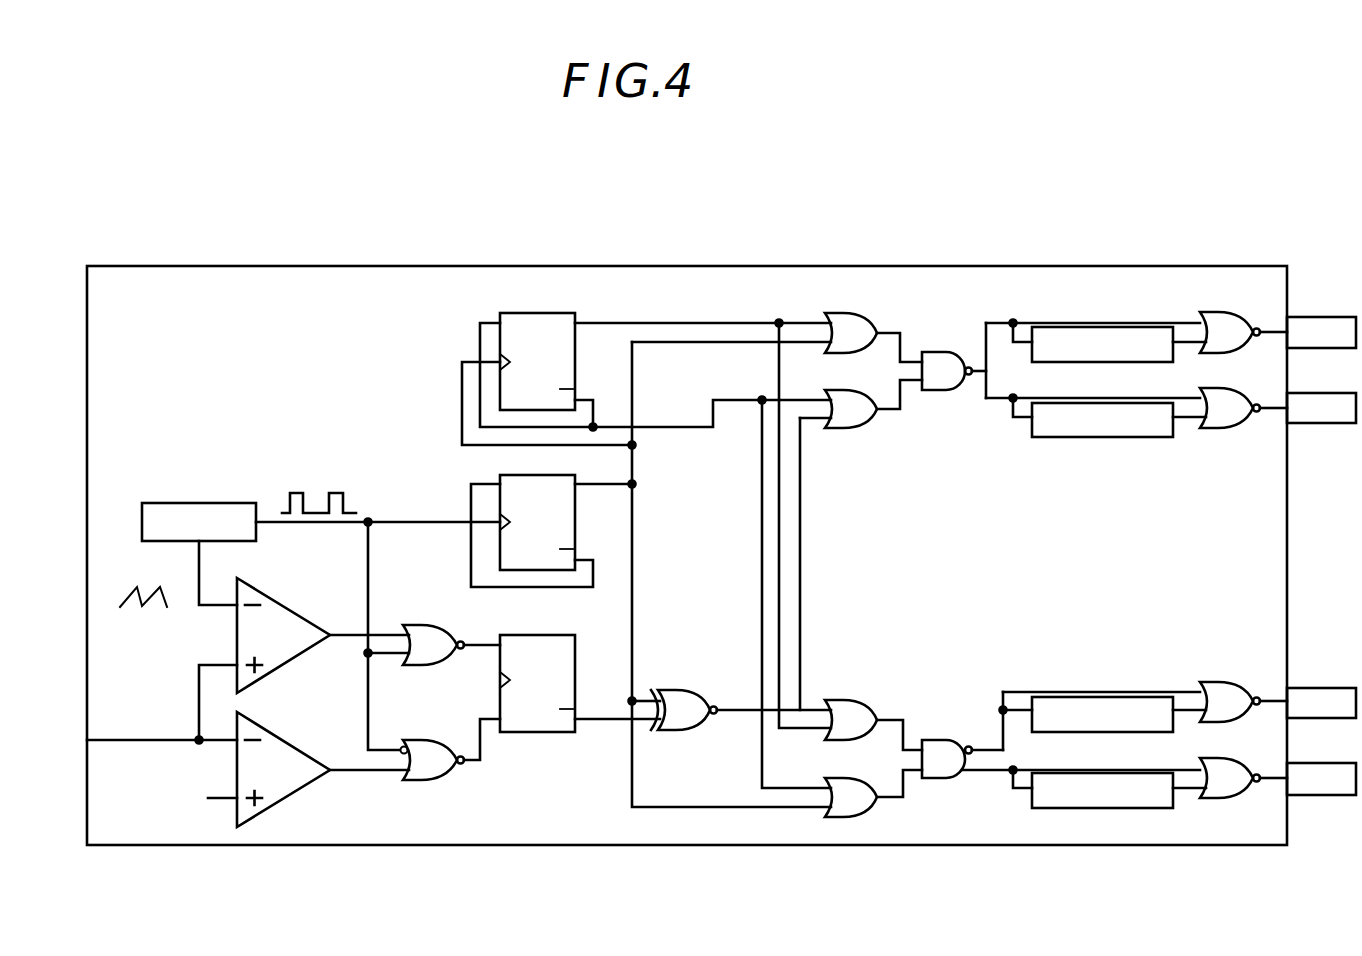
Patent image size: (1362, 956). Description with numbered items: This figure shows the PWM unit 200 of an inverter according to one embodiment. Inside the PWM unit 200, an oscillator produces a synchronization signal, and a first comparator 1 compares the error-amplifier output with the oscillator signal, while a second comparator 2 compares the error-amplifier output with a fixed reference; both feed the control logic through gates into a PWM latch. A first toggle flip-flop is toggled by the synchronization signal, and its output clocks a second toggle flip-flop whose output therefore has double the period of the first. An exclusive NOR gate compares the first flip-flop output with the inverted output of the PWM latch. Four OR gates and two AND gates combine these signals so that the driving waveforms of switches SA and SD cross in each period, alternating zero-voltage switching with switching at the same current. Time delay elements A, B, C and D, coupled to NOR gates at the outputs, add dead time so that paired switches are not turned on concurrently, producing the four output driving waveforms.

The PWM unit 200 is at (943, 266).
The comparator Comp1 1 is at (284, 635).
The comparator Comp2 2 is at (286, 769).